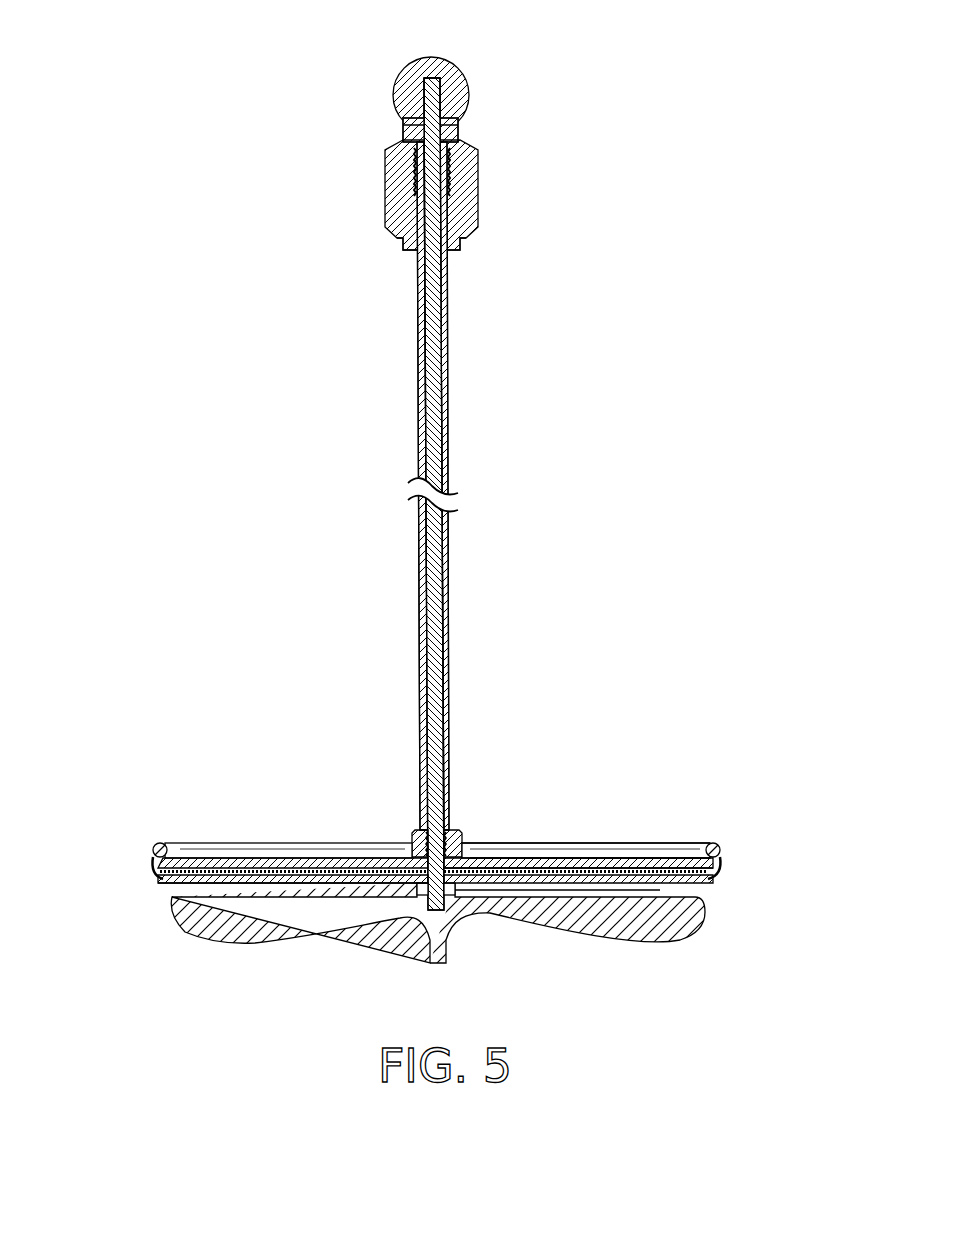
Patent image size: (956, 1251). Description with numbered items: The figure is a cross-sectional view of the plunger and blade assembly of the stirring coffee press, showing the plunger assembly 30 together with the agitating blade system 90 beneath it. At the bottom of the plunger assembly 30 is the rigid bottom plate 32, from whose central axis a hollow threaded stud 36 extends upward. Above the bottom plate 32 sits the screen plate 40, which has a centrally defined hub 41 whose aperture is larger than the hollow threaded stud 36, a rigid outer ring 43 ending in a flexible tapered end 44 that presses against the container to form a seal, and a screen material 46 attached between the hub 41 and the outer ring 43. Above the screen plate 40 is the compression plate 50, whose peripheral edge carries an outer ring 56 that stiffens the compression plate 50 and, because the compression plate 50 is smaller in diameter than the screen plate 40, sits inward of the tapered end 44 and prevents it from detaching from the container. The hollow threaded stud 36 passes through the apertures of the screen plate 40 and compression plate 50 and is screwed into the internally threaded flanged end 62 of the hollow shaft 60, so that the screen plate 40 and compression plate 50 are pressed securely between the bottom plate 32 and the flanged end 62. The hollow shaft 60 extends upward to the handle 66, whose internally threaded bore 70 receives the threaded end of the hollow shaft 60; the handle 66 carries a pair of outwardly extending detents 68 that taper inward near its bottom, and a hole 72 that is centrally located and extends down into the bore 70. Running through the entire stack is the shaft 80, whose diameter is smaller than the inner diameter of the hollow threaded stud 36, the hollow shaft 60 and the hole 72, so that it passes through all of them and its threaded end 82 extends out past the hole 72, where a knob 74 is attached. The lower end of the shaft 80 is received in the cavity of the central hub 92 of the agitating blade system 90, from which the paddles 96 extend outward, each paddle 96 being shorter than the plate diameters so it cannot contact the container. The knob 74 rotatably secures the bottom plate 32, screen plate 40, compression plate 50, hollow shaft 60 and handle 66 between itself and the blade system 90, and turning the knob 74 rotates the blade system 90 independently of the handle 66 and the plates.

The plunger assembly 30 is at (652, 198).
The knob 74 is at (440, 60).
The handle 66 is at (470, 115).
The hole 72 is at (403, 124).
The detents 68 is at (480, 165).
The internally threaded bore 70 is at (413, 247).
The shaft 80 is at (417, 400).
The hollow shaft 60 is at (447, 400).
The threaded end 82 is at (422, 96).
The internally threaded flanged end 62 is at (412, 835).
The paddles 96 is at (222, 940).
The agitating blade system 90 is at (527, 930).
The central hub 92 is at (660, 890).
The flexible tapered end 44 is at (722, 852).
The screen material 46 is at (250, 866).
The rigid outer ring 43 is at (160, 877).
The screen plate 40 is at (722, 873).
The outer ring 56 is at (155, 845).
The compression plate 50 is at (603, 857).
The hollow threaded stud 36 is at (472, 858).
The hub 41 is at (470, 870).
The bottom plate 32 is at (177, 884).